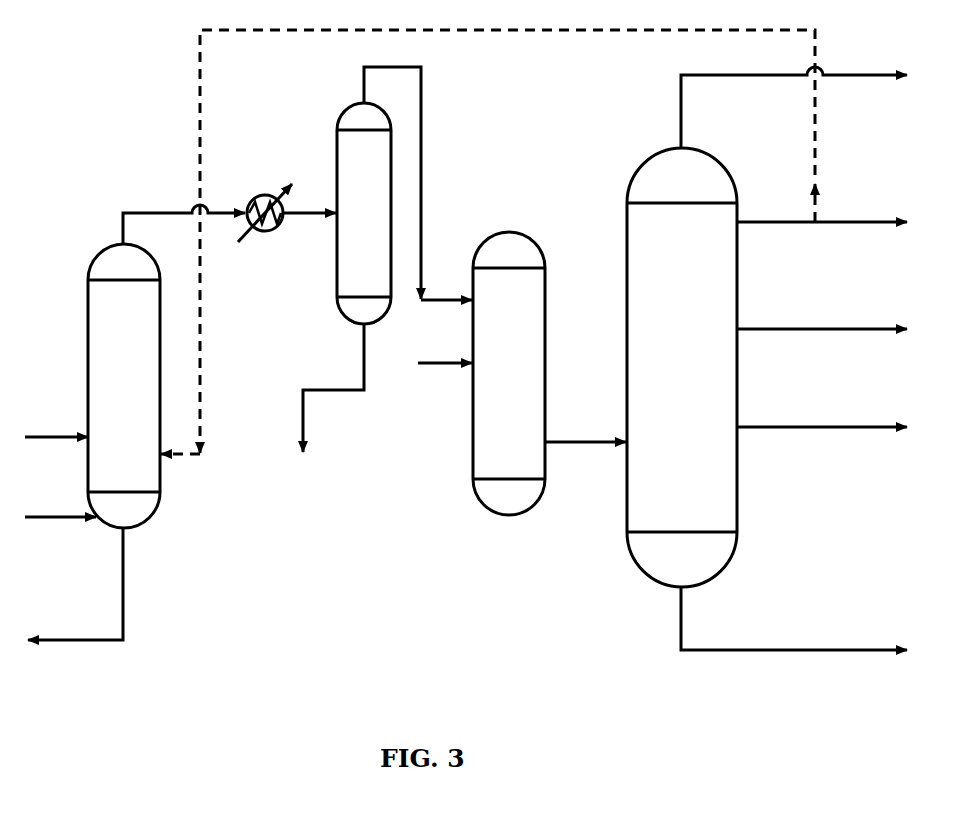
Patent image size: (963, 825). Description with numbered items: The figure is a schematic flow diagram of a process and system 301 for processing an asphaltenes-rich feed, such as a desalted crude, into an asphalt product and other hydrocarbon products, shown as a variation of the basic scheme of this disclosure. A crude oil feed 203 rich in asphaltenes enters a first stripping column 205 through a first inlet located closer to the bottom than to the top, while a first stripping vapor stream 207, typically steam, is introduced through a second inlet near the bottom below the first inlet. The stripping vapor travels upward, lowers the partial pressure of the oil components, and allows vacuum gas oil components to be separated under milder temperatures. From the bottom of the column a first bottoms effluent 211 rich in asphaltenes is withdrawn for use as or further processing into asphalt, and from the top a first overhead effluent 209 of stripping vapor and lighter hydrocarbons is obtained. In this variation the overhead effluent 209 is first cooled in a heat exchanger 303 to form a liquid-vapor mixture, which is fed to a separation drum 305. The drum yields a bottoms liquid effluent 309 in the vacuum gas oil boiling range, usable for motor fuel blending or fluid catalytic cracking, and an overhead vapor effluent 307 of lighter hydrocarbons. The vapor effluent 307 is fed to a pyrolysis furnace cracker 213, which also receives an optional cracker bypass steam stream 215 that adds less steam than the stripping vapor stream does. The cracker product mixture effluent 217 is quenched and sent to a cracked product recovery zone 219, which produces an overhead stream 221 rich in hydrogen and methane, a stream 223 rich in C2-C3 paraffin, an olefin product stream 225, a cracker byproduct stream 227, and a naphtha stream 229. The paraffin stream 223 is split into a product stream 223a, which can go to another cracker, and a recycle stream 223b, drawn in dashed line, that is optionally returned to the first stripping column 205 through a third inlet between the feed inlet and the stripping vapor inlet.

The process and system 301 is at (142, 98).
The crude oil feed 203 is at (56, 421).
The first stripping column 205 is at (124, 386).
The first stripping vapor stream 207 is at (60, 500).
The first overhead effluent 209 is at (229, 213).
The first bottoms effluent 211 is at (75, 583).
The pyrolysis furnace cracker 213 is at (509, 373).
The cracker bypass steam stream 215 is at (445, 347).
The cracker product mixture effluent 217 is at (585, 427).
The cracked product recovery zone 219 is at (682, 367).
The overhead stream 221 is at (794, 96).
The stream rich in C2-C3 paraffin 223 is at (776, 209).
The product stream 223a is at (861, 209).
The recycle stream 223b is at (817, 123).
The olefin product stream 225 is at (822, 314).
The cracker byproduct stream 227 is at (822, 411).
The naphtha stream 229 is at (794, 618).
The heat exchanger 303 is at (278, 228).
The separation drum 305 is at (364, 213).
The overhead vapor effluent 307 is at (423, 103).
The bottoms liquid effluent 309 is at (333, 387).